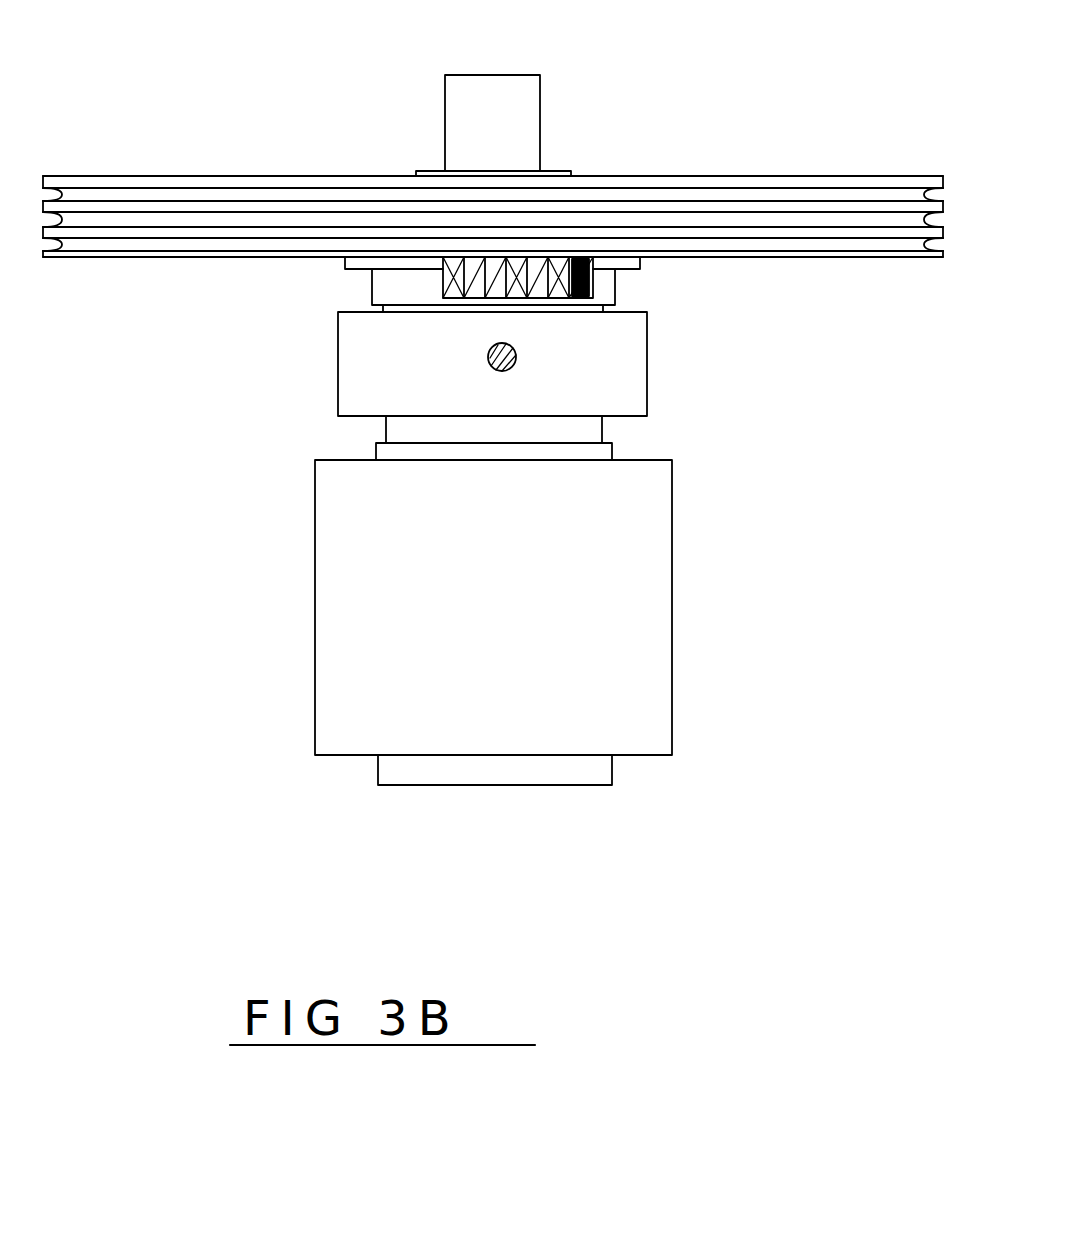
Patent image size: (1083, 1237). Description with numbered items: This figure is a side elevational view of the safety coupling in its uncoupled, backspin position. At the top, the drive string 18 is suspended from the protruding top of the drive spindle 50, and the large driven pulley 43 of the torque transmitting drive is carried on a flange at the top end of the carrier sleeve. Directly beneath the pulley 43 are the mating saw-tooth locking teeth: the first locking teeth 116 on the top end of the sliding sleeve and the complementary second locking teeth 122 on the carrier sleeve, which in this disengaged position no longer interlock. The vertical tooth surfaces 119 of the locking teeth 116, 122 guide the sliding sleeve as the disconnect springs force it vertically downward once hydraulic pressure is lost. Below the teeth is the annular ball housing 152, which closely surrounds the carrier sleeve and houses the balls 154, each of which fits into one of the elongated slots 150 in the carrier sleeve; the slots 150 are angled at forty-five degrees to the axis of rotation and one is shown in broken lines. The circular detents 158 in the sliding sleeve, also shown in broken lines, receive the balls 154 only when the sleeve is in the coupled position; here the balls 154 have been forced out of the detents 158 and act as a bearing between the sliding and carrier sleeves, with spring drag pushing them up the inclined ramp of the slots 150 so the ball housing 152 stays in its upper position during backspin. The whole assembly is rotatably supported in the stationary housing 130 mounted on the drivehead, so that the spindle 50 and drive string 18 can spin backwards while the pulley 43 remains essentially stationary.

The drive string 18 is at (463, 83).
The driven pulley 43 is at (681, 176).
The drive spindle 50 is at (549, 170).
The first locking teeth 116 is at (417, 257).
The vertical tooth surfaces 119 is at (523, 282).
The second locking teeth 122 is at (473, 265).
The stationary housing 130 is at (673, 577).
The elongated slots 150 is at (488, 360).
The ball housing 152 is at (648, 357).
The balls 154 is at (512, 346).
The circular detents 158 is at (503, 372).